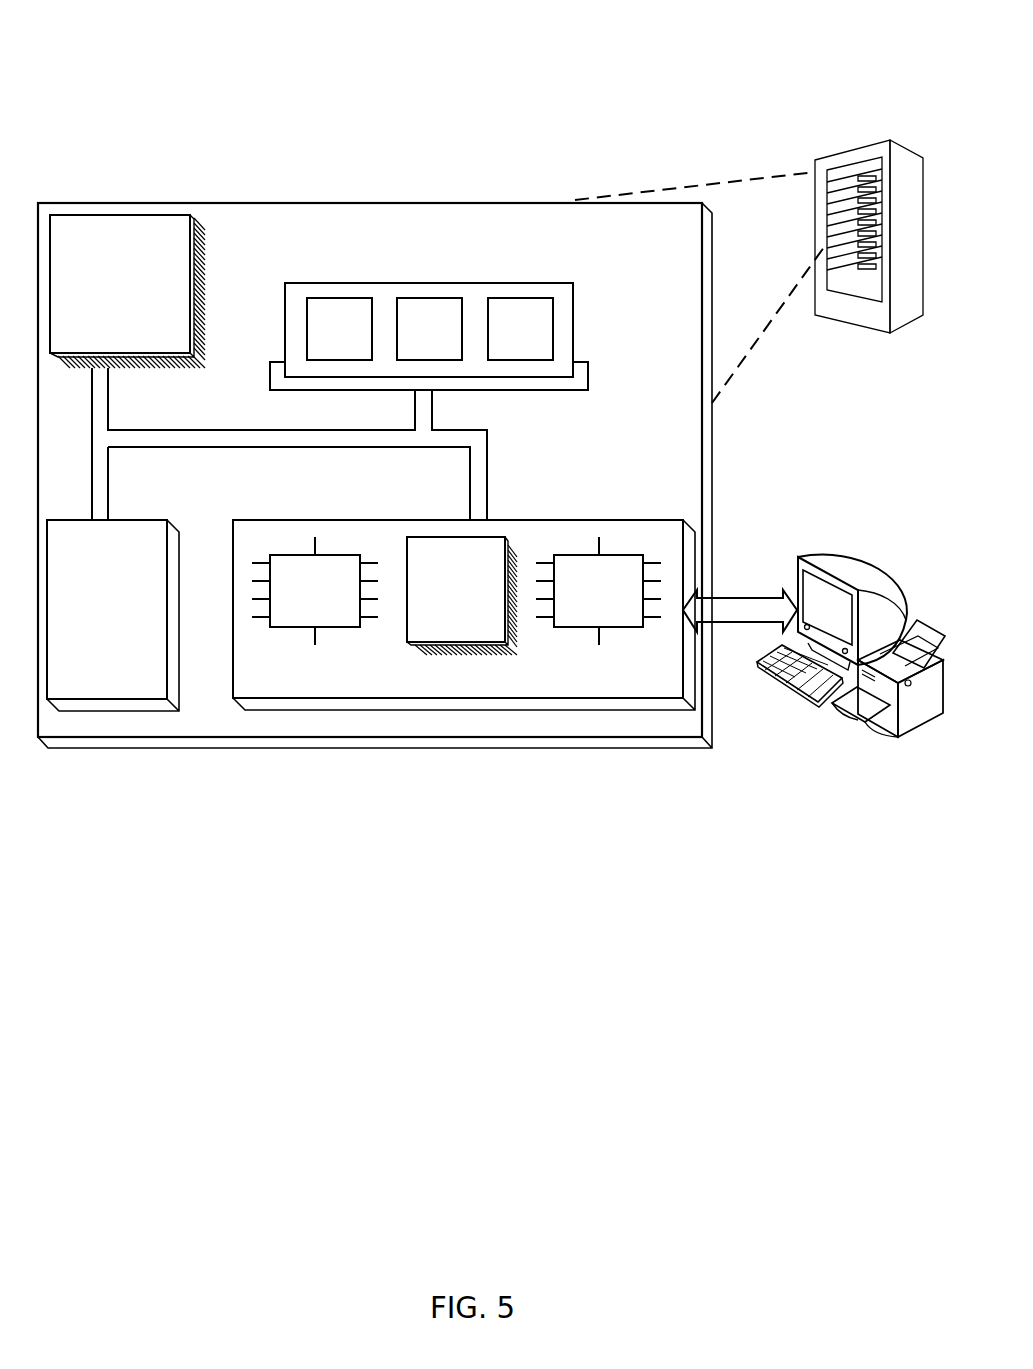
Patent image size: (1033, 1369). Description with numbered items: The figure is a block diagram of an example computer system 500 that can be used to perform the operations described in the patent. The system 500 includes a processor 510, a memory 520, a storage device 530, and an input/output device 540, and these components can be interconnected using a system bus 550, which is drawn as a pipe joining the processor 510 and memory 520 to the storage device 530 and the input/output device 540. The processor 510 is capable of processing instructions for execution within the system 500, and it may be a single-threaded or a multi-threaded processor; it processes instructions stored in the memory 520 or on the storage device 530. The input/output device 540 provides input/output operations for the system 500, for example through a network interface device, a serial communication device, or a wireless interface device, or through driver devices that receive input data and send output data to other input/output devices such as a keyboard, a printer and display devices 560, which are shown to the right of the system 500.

The computer system 500 is at (86, 62).
The processor 510 is at (181, 345).
The memory 520 is at (574, 330).
The storage device 530 is at (149, 691).
The input/output device 540 is at (645, 520).
The system bus 550 is at (288, 448).
The display devices 560 is at (800, 558).